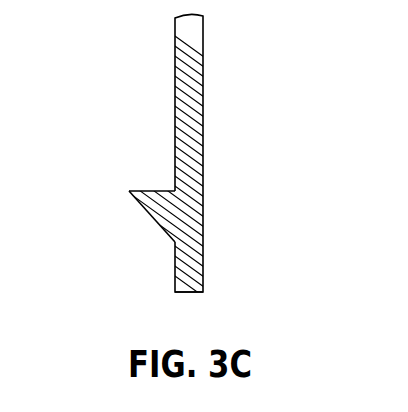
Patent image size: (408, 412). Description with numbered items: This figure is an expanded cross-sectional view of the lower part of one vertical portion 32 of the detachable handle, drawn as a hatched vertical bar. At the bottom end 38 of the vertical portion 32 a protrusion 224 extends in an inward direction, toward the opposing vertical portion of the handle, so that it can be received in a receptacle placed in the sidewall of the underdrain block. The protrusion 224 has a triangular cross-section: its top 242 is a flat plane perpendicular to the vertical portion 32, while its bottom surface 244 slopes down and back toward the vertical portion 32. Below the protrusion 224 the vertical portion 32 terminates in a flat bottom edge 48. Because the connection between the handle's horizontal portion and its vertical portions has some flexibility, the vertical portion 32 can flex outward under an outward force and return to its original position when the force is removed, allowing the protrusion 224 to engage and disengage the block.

The vertical portion 32 is at (179, 164).
The bottom end 38 is at (203, 142).
The protrusion 224 is at (94, 229).
The top of the protrusion 242 is at (152, 188).
The bottom surface of the protrusion 244 is at (150, 214).
The bottom edge 48 is at (192, 292).